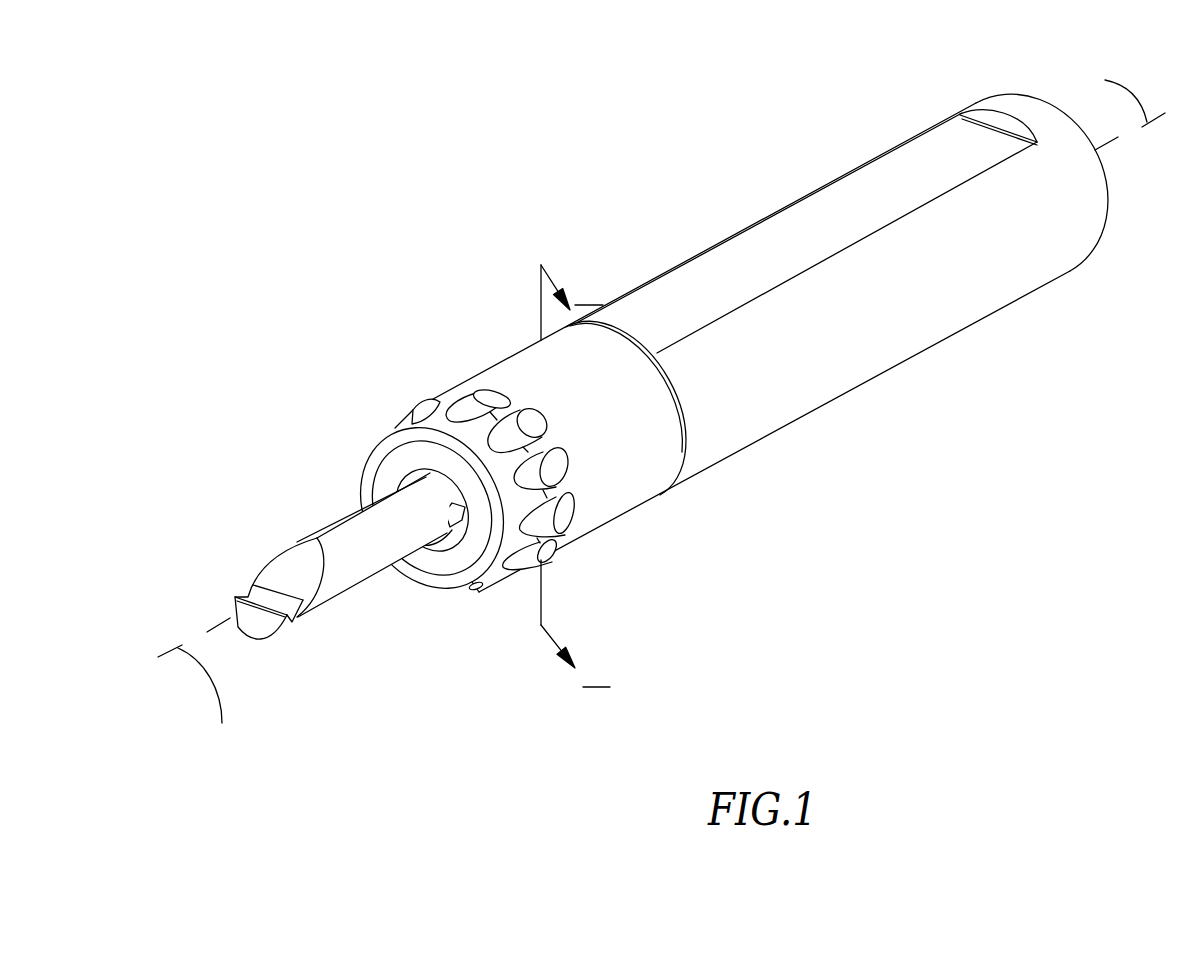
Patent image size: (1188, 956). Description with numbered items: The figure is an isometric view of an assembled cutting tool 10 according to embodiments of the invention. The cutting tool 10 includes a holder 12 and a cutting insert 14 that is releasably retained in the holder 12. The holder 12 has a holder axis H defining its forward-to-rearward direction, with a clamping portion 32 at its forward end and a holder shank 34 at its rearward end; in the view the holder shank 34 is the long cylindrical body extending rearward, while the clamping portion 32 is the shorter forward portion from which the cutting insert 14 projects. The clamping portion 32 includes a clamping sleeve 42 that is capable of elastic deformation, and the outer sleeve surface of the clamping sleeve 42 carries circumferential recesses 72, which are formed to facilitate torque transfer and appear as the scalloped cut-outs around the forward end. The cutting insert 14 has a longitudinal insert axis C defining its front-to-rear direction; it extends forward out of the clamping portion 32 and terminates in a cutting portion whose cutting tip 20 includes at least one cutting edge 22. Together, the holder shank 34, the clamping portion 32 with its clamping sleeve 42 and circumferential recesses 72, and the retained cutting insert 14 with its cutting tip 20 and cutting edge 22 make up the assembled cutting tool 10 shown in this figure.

The cutting tool 10 is at (506, 120).
The holder 12 is at (673, 158).
The cutting insert 14 is at (316, 481).
The cutting tip 20 is at (286, 618).
The cutting edge 22 is at (268, 600).
The clamping portion 32 is at (479, 314).
The holder shank 34 is at (840, 220).
The clamping sleeve 42 is at (637, 447).
The circumferential recesses 72 is at (537, 523).